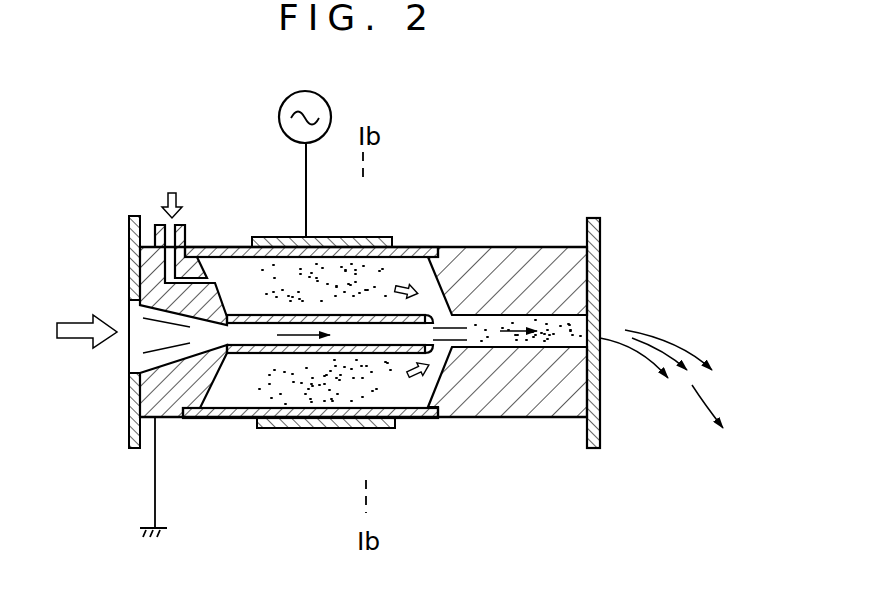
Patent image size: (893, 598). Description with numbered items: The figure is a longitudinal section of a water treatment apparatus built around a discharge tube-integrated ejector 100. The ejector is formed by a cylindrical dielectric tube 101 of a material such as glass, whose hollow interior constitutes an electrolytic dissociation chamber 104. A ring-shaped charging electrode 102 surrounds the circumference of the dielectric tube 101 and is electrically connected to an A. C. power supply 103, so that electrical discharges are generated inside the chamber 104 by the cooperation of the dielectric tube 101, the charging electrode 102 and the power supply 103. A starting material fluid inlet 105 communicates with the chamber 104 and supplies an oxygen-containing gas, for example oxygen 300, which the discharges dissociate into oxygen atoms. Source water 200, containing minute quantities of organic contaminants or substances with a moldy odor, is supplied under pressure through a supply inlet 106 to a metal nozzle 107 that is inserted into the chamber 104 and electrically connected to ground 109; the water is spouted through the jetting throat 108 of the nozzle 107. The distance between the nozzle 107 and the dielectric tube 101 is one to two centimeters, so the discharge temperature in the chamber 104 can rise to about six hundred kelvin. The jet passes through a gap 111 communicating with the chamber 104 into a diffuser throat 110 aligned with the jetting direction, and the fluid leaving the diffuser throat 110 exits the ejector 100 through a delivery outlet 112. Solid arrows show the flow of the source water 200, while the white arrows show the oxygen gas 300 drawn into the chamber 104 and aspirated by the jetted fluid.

The discharge tube-integrated ejector 100 is at (540, 247).
The dielectric tube 101 is at (425, 257).
The charging electrode 102 is at (386, 237).
The A. C. power supply 103 is at (332, 105).
The electrolytic dissociation chamber 104 is at (295, 285).
The starting material fluid inlet 105 is at (152, 227).
The supply inlet 106 is at (122, 343).
The nozzle 107 is at (232, 353).
The jetting throat 108 is at (437, 350).
The ground 109 is at (145, 538).
The diffuser throat 110 is at (550, 333).
The gap 111 is at (463, 247).
The delivery outlet 112 is at (600, 328).
The source water 200 is at (77, 322).
The oxygen 300 is at (180, 203).